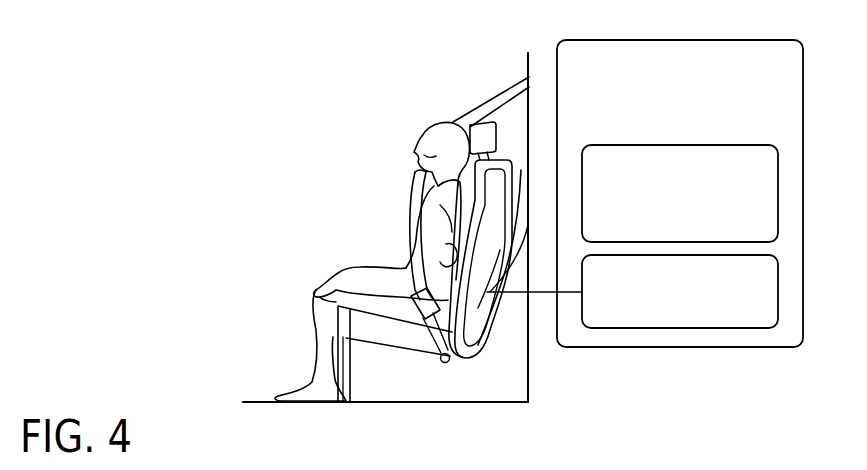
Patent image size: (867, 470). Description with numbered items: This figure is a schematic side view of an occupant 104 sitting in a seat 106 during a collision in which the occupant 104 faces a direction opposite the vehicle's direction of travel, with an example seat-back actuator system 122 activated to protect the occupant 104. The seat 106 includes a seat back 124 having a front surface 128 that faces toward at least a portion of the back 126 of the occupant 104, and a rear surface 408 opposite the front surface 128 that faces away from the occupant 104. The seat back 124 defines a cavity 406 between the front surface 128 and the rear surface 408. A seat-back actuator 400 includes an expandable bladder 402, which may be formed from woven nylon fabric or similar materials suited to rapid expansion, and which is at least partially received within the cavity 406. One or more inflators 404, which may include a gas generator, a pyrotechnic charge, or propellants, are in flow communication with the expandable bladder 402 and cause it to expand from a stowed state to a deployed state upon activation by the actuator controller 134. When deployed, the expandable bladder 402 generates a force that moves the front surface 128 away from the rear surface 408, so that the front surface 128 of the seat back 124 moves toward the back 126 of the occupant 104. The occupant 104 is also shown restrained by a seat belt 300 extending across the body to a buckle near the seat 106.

The occupant 104 is at (422, 136).
The seat 106 is at (410, 340).
The seat-back actuator system 122 is at (698, 125).
The seat back 124 is at (521, 170).
The back of the occupant 126 is at (452, 234).
The front surface of the seat back 128 is at (446, 210).
The actuator controller 134 is at (698, 234).
The seat belt 300 is at (412, 233).
The seat-back actuator 400 is at (500, 203).
The expandable bladder 402 is at (478, 308).
The inflator 404 is at (698, 318).
The cavity 406 is at (452, 260).
The rear surface of the seat back 408 is at (490, 292).